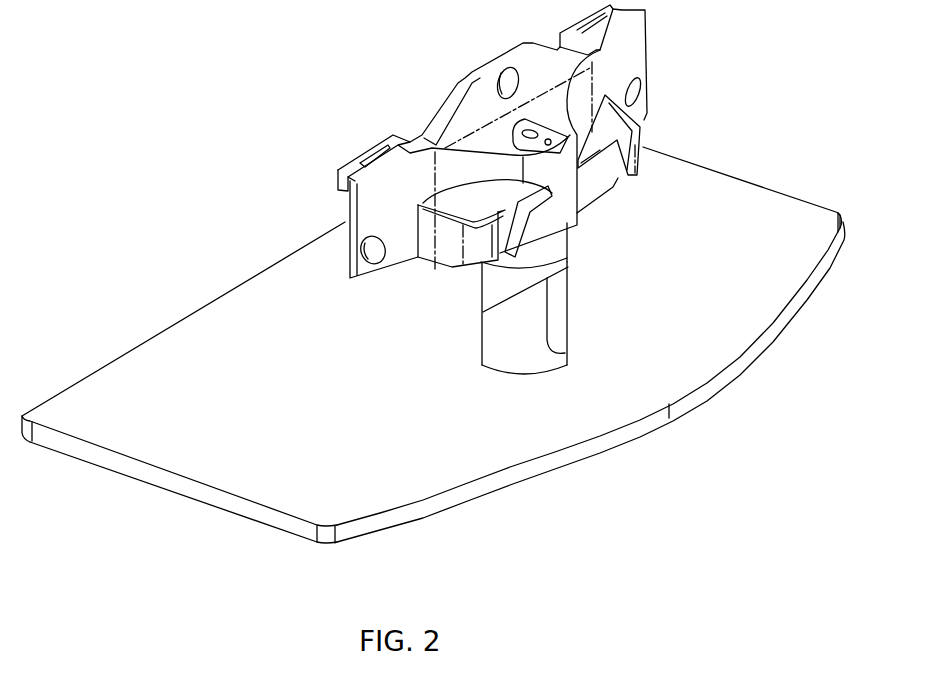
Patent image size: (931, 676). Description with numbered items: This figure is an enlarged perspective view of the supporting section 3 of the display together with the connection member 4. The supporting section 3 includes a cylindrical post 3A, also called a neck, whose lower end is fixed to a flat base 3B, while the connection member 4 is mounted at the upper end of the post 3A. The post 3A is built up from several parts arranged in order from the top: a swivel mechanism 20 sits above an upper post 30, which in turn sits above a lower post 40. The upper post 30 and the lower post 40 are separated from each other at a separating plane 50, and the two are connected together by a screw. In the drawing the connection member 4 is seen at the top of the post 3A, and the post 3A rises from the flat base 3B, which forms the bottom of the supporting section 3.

The supporting section 3 is at (690, 93).
The post 3A is at (594, 224).
The base 3B is at (772, 208).
The connection member 4 is at (647, 22).
The swivel mechanism 20 is at (572, 233).
The upper post 30 is at (525, 278).
The lower post 40 is at (523, 351).
The separating plane 50 is at (495, 364).